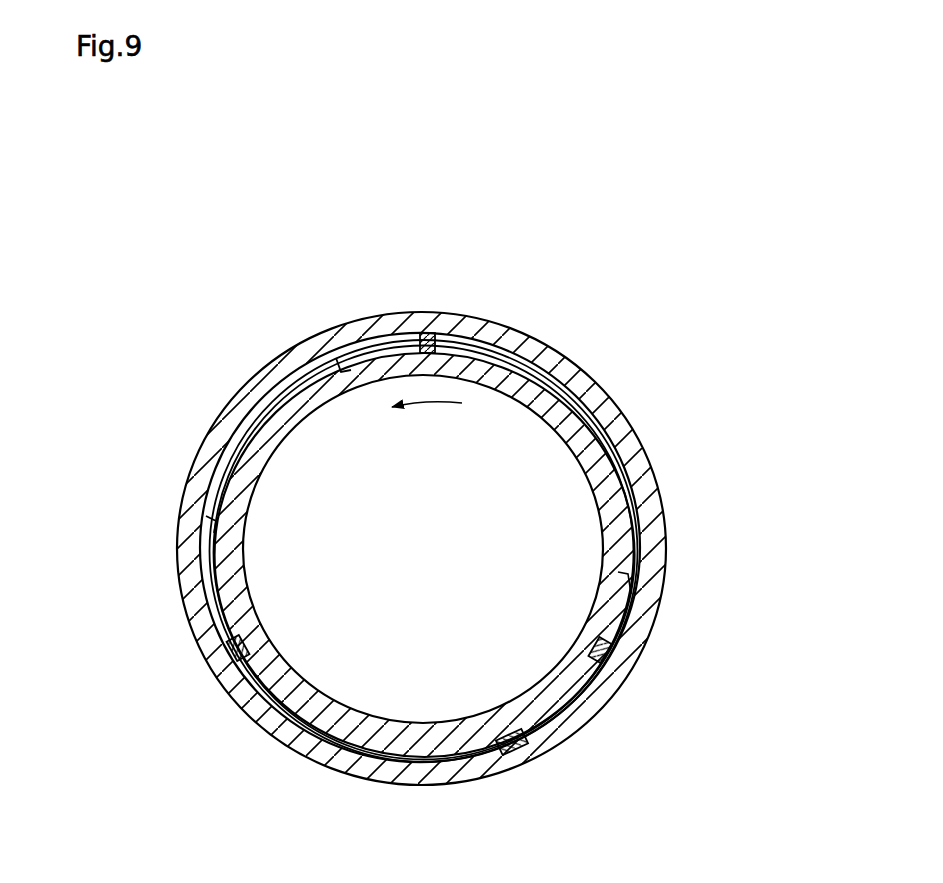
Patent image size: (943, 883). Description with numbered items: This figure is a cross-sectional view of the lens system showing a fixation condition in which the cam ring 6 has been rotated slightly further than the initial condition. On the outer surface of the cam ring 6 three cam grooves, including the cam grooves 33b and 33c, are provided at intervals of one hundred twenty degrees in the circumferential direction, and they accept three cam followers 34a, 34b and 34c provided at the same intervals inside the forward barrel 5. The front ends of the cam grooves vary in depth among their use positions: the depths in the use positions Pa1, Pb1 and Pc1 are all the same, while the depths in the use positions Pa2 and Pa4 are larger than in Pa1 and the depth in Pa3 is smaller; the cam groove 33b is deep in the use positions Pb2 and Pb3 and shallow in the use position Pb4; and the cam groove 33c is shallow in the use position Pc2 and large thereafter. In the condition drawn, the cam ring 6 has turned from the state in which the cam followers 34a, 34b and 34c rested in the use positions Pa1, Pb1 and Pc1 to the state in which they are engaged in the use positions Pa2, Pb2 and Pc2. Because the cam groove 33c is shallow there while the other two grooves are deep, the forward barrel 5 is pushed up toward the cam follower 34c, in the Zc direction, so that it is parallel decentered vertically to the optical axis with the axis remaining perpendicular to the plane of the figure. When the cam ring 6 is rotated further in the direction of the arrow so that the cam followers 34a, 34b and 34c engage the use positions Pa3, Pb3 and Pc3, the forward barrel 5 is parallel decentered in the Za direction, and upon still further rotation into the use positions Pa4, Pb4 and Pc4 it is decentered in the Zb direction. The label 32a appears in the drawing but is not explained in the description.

The forward barrel 5 is at (246, 384).
The cam ring 6 is at (293, 430).
The engaging piece 32a is at (612, 653).
The cam groove 33b is at (212, 522).
The cam groove 33c is at (343, 366).
The cam follower 34a is at (514, 752).
The cam follower 34b is at (240, 658).
The cam follower 34c is at (425, 336).
The use position Pa1 is at (627, 595).
The use position Pa2 is at (602, 663).
The use position Pa3 is at (578, 708).
The use position Pa4 is at (522, 736).
The use position Pb1 is at (291, 714).
The use position Pb2 is at (241, 644).
The use position Pb3 is at (233, 598).
The use position Pb4 is at (211, 548).
The use position Pc1 is at (368, 359).
The use position Pc2 is at (443, 351).
The use position Pc3 is at (482, 365).
The use position Pc4 is at (527, 381).
The Za direction Za is at (705, 722).
The Zb direction Zb is at (135, 722).
The Zc direction Zc is at (428, 222).